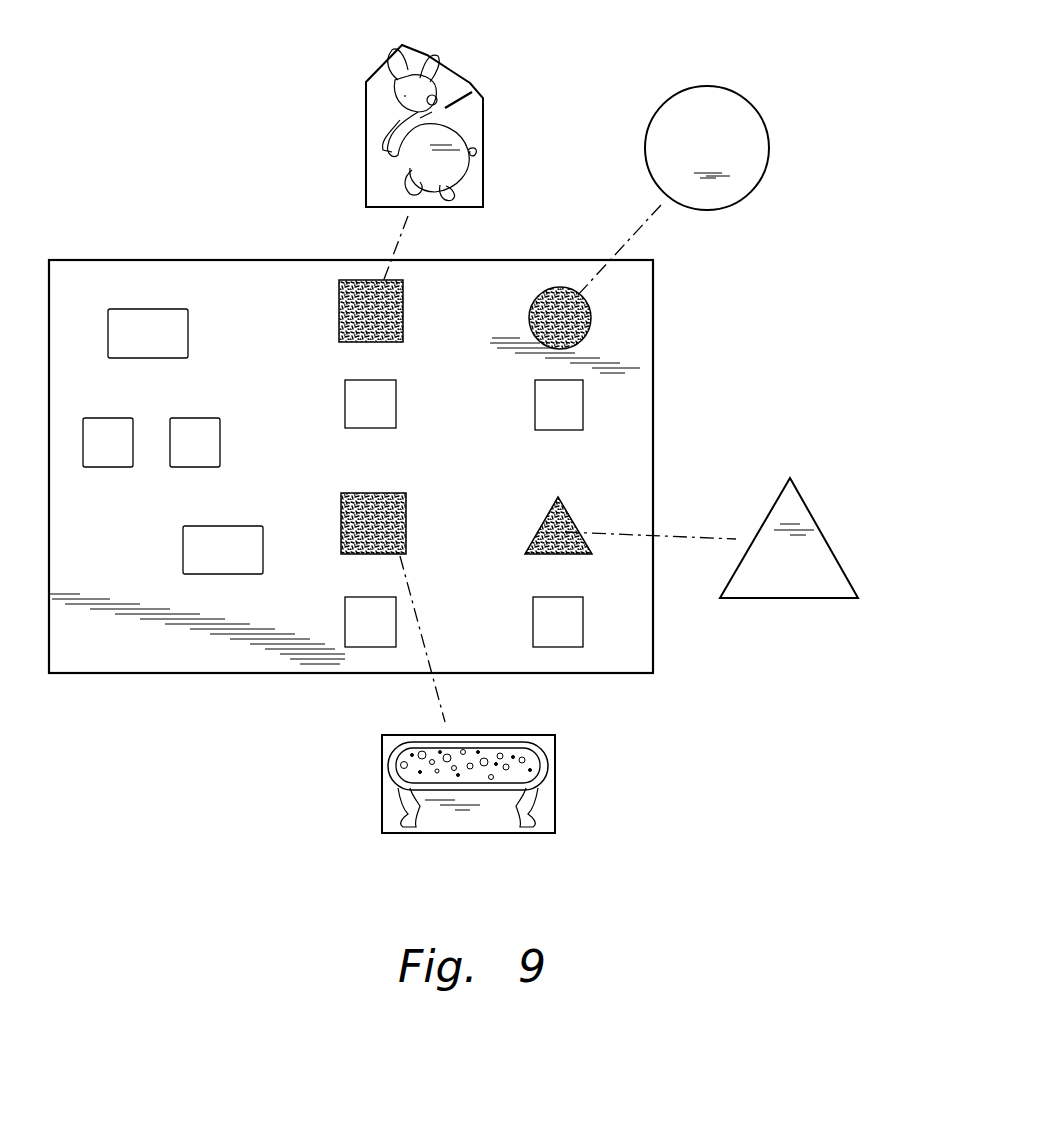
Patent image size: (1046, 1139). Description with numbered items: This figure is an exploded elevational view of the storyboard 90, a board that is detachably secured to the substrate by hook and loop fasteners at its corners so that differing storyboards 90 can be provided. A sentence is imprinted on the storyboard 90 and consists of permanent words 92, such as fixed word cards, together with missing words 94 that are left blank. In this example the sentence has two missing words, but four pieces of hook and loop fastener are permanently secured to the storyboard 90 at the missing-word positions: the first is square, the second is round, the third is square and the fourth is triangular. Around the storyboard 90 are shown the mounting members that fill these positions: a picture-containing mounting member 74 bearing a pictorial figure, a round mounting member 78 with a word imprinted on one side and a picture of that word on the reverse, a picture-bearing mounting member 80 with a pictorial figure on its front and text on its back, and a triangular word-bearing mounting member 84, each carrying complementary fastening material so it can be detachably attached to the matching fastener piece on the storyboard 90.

The picture-containing mounting members 74 is at (478, 62).
The mounting members 78 is at (752, 74).
The picture-bearing mounting members 80 is at (557, 748).
The word-bearing mounting members 84 is at (838, 510).
The storyboard 90 is at (196, 203).
The permanent words 92 is at (190, 329).
The missing words 94 is at (405, 301).